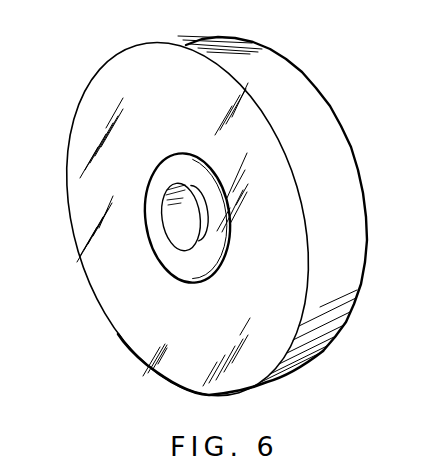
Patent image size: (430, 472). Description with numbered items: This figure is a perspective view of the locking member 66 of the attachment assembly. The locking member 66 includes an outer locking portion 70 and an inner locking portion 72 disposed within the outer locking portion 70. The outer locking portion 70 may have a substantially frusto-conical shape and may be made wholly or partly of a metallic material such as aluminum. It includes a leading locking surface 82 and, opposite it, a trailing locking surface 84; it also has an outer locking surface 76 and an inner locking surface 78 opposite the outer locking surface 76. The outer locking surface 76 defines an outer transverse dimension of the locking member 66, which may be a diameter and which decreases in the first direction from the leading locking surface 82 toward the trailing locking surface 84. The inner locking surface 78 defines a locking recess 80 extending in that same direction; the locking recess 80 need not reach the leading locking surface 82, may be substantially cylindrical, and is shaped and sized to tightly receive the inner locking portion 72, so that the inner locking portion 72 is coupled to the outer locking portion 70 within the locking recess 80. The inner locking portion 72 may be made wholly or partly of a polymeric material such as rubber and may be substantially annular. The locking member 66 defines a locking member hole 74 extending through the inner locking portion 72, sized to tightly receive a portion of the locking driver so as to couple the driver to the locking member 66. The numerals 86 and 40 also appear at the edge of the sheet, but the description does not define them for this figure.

The locking member 66 is at (287, 82).
The outer locking portion 70 is at (100, 107).
The inner locking portion 72 is at (177, 256).
The locking member hole 74 is at (176, 200).
The outer locking surface 76 is at (318, 165).
The inner locking surface 78 is at (228, 213).
The locking recess 80 is at (244, 253).
The leading locking surface 82 is at (117, 70).
The trailing locking surface 84 is at (361, 293).
The member 86 is at (429, 228).
The assembly 40 is at (429, 283).